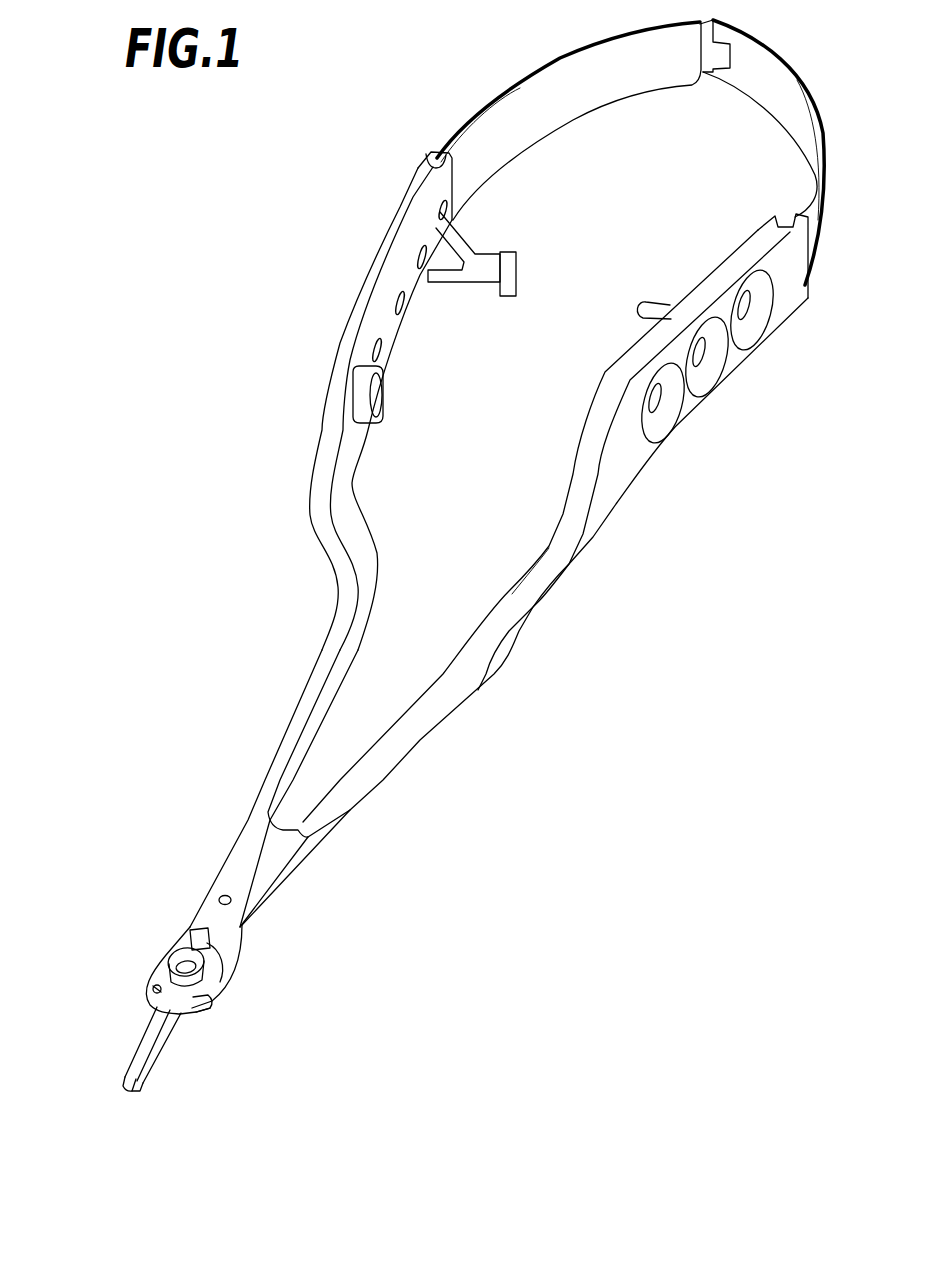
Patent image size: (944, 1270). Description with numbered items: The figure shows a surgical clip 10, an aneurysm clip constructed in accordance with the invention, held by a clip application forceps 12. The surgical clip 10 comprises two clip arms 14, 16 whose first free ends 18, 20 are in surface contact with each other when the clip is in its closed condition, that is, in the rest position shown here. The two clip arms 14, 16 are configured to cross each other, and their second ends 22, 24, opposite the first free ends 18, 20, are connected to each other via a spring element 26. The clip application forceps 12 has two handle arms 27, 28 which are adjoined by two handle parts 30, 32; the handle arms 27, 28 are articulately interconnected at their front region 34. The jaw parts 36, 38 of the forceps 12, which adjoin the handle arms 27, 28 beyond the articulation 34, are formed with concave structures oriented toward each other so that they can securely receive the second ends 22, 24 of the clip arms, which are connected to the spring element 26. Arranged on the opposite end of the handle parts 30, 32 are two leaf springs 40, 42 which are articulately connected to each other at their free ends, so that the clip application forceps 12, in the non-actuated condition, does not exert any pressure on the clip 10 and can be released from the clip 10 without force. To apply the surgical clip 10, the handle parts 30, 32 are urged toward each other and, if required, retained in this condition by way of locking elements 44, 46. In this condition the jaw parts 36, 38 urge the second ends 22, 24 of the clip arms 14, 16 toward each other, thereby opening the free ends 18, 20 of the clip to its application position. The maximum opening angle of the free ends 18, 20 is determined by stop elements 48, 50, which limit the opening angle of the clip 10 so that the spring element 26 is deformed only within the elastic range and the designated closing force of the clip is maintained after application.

The surgical clip 10 is at (450, 601).
The clip application forceps 12 is at (508, 473).
The clip arm 14 is at (141, 1066).
The clip arm 16 is at (170, 1058).
The first free end 18 is at (122, 1078).
The first free end 20 is at (141, 1086).
The second end 22 is at (171, 1006).
The second end 24 is at (197, 1018).
The spring element 26 is at (190, 966).
The handle arm 27 is at (260, 788).
The handle arm 28 is at (452, 725).
The handle part 30 is at (377, 401).
The handle part 32 is at (525, 569).
The front region 34 is at (203, 892).
The jaw part 36 is at (155, 972).
The jaw part 38 is at (222, 988).
The leaf spring 40 is at (528, 108).
The leaf spring 42 is at (805, 108).
The locking element 44 is at (508, 258).
The locking element 46 is at (652, 312).
The stop element 48 is at (150, 991).
The stop element 50 is at (207, 1012).